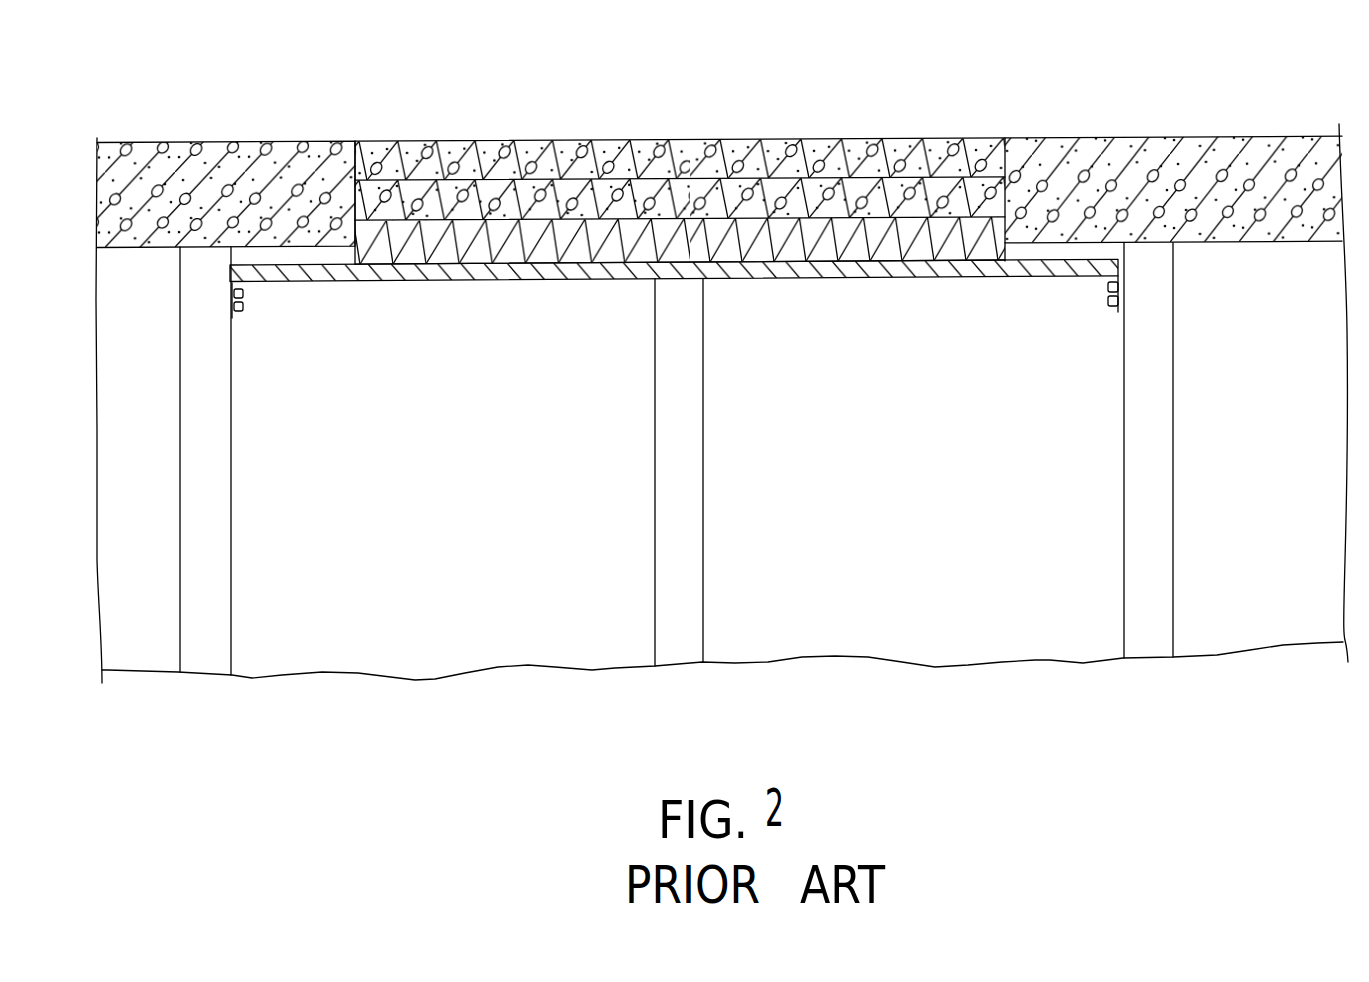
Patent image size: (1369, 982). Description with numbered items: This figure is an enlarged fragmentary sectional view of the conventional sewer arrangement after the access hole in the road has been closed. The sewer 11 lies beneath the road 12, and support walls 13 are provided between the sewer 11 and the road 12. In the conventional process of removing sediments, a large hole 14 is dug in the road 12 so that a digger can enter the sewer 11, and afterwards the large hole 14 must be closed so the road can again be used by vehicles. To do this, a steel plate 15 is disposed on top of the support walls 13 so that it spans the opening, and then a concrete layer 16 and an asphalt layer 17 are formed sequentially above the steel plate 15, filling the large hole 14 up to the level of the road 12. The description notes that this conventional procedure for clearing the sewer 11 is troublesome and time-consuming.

The sewer 11 is at (308, 302).
The road 12 is at (1076, 137).
The support walls 13 is at (700, 473).
The large hole 14 is at (366, 163).
The steel plate 15 is at (470, 253).
The concrete layer 16 is at (570, 180).
The asphalt layer 17 is at (507, 145).